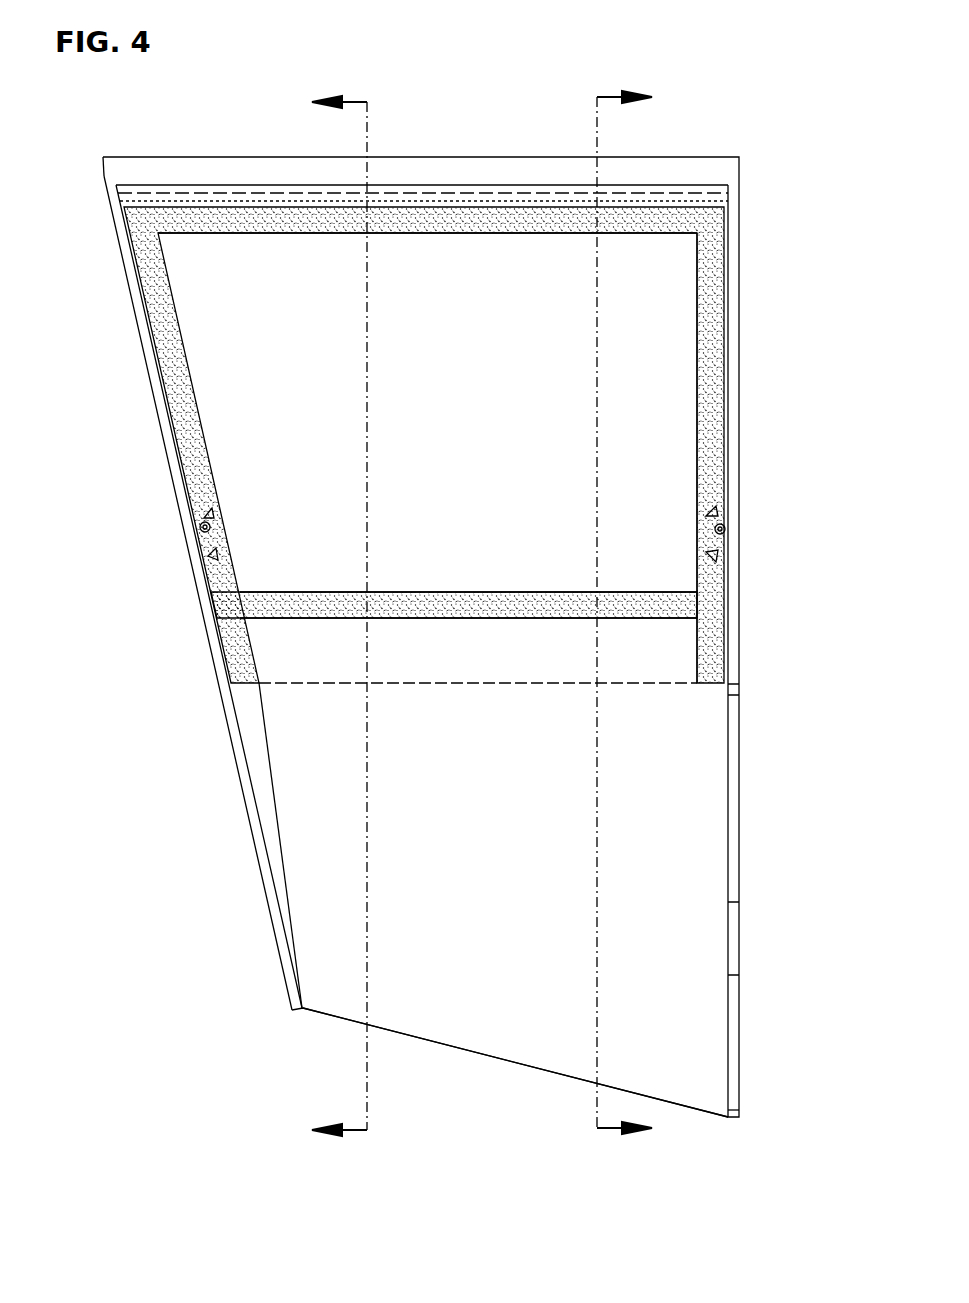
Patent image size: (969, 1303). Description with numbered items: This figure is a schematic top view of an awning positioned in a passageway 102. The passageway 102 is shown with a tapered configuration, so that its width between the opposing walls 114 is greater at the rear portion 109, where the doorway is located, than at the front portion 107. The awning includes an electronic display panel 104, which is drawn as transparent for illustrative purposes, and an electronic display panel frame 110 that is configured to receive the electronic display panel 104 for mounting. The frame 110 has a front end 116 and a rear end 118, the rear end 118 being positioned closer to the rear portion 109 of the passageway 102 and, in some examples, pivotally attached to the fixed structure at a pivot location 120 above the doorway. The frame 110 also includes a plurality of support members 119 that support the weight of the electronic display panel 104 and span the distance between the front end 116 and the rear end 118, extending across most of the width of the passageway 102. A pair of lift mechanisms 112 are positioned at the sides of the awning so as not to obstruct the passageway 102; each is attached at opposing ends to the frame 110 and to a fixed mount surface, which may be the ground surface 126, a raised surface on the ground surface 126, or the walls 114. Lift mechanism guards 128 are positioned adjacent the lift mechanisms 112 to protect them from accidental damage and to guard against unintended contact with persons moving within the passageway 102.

The passageway 102 is at (700, 1018).
The electronic display panel 104 is at (300, 686).
The front portion 107 is at (480, 1018).
The rear portion 109 is at (468, 250).
The electronic display panel frame 110 is at (722, 345).
The lift mechanisms 112 is at (200, 526).
The walls 114 is at (143, 346).
The front end 116 is at (287, 628).
The rear end 118 is at (221, 183).
The support members 119 is at (707, 268).
The pivot location 120 is at (106, 178).
The ground surface 126 is at (322, 846).
The lift mechanism guards 128 is at (208, 512).